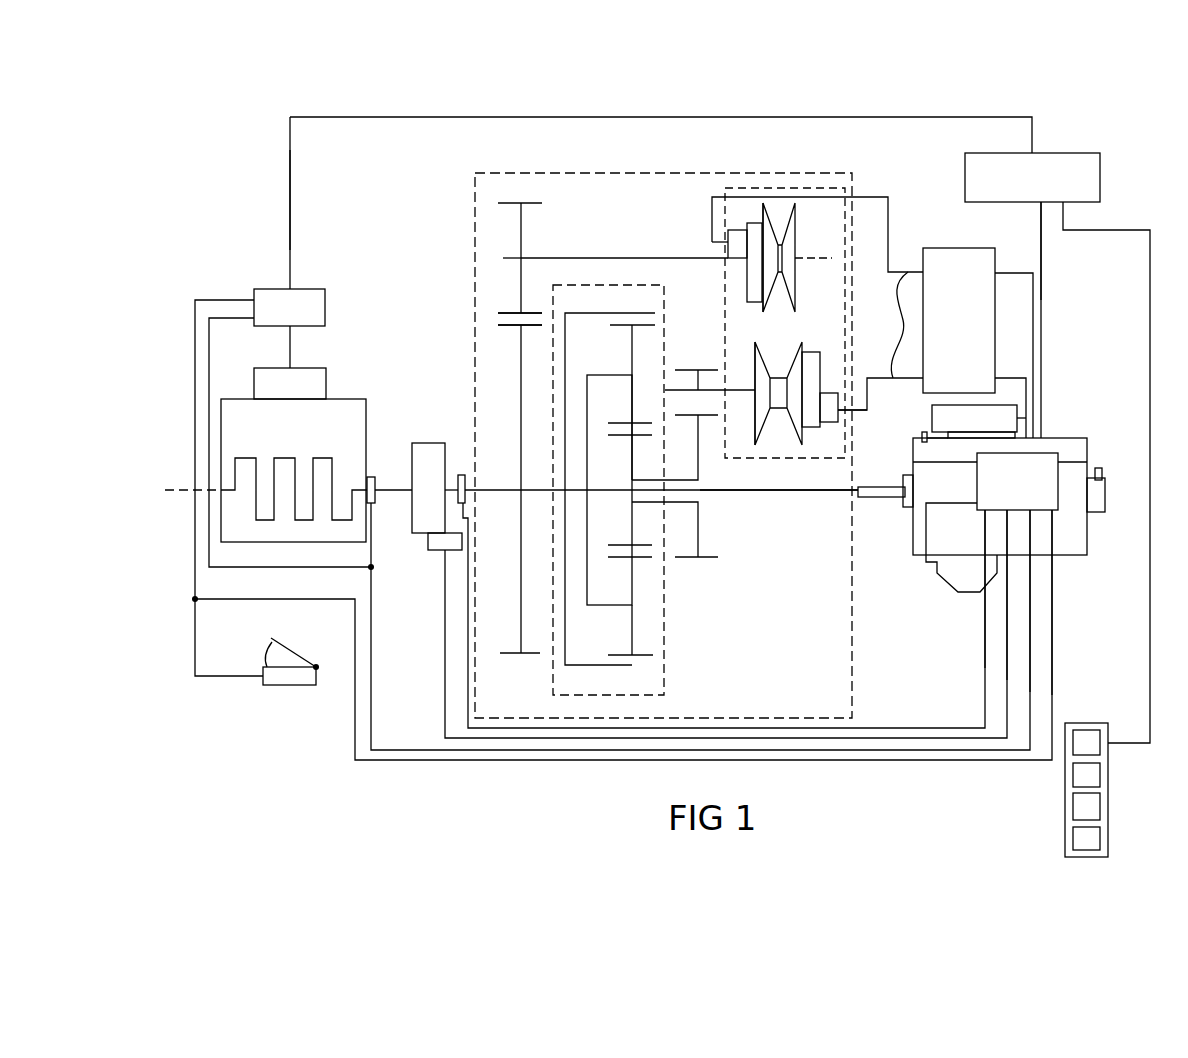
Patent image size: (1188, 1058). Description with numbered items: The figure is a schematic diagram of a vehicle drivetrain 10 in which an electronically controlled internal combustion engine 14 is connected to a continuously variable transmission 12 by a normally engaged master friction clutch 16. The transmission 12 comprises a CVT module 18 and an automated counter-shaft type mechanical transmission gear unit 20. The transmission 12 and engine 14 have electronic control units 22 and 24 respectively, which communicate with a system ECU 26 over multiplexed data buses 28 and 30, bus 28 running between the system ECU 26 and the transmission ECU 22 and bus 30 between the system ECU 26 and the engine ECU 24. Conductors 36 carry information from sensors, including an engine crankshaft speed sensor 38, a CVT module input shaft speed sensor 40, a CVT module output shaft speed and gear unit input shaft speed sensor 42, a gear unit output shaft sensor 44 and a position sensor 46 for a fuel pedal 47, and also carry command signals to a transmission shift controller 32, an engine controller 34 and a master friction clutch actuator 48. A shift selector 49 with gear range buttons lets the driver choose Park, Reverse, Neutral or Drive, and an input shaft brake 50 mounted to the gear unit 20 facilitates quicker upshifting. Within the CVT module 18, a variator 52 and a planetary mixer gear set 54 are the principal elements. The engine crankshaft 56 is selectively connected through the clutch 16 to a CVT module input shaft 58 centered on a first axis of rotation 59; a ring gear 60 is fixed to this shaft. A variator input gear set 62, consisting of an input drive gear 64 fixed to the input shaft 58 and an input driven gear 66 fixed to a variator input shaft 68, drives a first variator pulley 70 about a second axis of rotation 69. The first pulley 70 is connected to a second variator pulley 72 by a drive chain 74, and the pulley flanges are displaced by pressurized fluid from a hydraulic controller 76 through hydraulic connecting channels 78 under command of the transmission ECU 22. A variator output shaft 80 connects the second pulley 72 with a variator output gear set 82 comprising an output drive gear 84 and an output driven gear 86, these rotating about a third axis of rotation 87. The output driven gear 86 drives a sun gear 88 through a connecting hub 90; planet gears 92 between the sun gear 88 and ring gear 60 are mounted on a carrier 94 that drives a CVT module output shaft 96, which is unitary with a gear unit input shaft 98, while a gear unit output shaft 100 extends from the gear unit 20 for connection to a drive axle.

The vehicle drivetrain 10 is at (251, 214).
The continuously variable transmission 12 is at (990, 106).
The electronically controlled internal combustion engine 14 is at (305, 432).
The master friction clutch 16 is at (430, 443).
The CVT module 18 is at (556, 172).
The automated counter-shaft type mechanical transmission gear unit 20 is at (1083, 556).
The transmission electronic control unit 22 is at (1030, 493).
The engine electronic control unit 24 is at (303, 319).
The system ECU 26 is at (1045, 190).
The multiplexed data bus 28 is at (1043, 262).
The multiplexed data bus 30 is at (291, 180).
The transmission shift controller 32 is at (986, 429).
The engine controller 34 is at (303, 395).
The conductors 36 is at (210, 350).
The engine crankshaft speed sensor 38 is at (375, 477).
The CVT module input shaft speed sensor 40 is at (462, 474).
The CVT module output shaft speed and gear unit input shaft speed sensor 42 is at (910, 500).
The gear unit output shaft sensor 44 is at (1098, 468).
The position sensor 46 is at (280, 686).
The fuel pedal 47 is at (292, 652).
The master friction clutch actuator 48 is at (430, 550).
The shift selector 49 is at (1065, 820).
The input shaft brake 50 is at (955, 588).
The variator 52 is at (790, 187).
The planetary mixer gear set 54 is at (638, 284).
The engine crankshaft 56 is at (331, 457).
The CVT module input shaft 58 is at (495, 490).
The first axis of rotation 59 is at (178, 492).
The ring gear 60 is at (594, 665).
The variator input gear set 62 is at (472, 309).
The input drive gear 64 is at (520, 380).
The input driven gear 66 is at (523, 215).
The variator input shaft 68 is at (613, 257).
The second axis of rotation 69 is at (510, 257).
The first variator pulley 70 is at (797, 270).
The second variator pulley 72 is at (800, 427).
The drive belt or chain 74 is at (790, 203).
The hydraulic controller 76 is at (971, 332).
The hydraulic connecting channels 78 is at (894, 326).
The variator output shaft 80 is at (745, 388).
The variator output gear set 82 is at (733, 527).
The output drive gear 84 is at (690, 368).
The output driven gear 86 is at (712, 558).
The third axis of rotation 87 is at (832, 386).
The sun gear 88 is at (630, 544).
The connecting hub 90 is at (686, 503).
The planet gears 92 is at (630, 421).
The carrier 94 is at (608, 372).
The CVT module output shaft 96 is at (758, 490).
The gear unit input shaft 98 is at (885, 488).
The gear unit output shaft 100 is at (1105, 508).